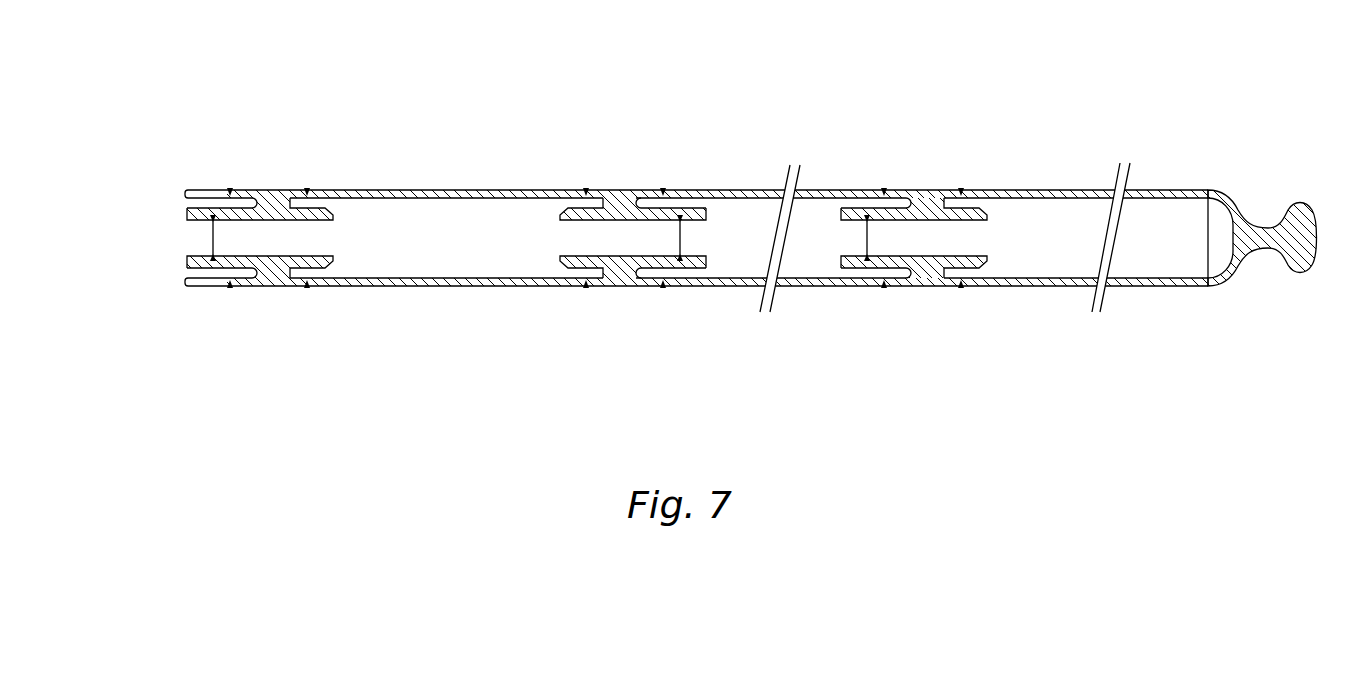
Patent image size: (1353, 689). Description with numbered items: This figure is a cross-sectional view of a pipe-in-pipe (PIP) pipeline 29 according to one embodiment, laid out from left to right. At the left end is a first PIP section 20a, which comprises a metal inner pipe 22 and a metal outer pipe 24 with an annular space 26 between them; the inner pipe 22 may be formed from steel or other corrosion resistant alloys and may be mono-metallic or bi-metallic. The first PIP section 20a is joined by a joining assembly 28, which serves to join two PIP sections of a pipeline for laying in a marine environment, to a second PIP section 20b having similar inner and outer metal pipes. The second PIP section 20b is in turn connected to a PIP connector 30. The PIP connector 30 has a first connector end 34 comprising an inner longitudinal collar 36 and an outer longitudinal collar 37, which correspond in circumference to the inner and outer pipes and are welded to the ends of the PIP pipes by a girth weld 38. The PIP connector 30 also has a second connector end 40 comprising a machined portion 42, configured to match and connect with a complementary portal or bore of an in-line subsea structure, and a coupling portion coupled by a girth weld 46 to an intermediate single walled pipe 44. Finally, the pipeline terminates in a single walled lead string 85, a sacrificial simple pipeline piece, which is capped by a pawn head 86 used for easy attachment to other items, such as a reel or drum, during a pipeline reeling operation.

The first PIP section 20a is at (200, 288).
The second PIP section 20b is at (727, 288).
The inner pipe 22 is at (182, 262).
The outer pipe 24 is at (185, 197).
The annular space 26 is at (195, 272).
The joining assembly 28 is at (478, 130).
The PIP pipeline 29 is at (565, 377).
The PIP connector 30 is at (274, 298).
The first connector end 34 is at (249, 186).
The inner longitudinal collar 36 is at (240, 221).
The outer longitudinal collar 37 is at (237, 190).
The girth weld 38 is at (243, 287).
The second connector end 40 is at (323, 232).
The machined portion 42 is at (973, 255).
The intermediate single walled pipe 44 is at (456, 288).
The girth weld 46 is at (310, 195).
The lead string 85 is at (1000, 288).
The pawn head 86 is at (1237, 283).